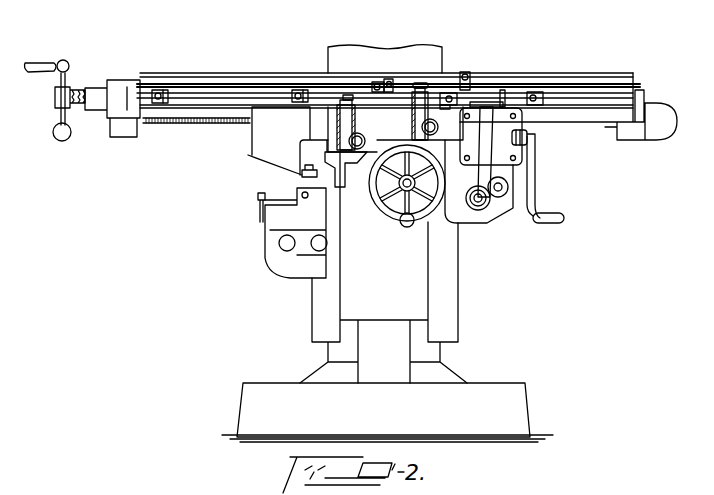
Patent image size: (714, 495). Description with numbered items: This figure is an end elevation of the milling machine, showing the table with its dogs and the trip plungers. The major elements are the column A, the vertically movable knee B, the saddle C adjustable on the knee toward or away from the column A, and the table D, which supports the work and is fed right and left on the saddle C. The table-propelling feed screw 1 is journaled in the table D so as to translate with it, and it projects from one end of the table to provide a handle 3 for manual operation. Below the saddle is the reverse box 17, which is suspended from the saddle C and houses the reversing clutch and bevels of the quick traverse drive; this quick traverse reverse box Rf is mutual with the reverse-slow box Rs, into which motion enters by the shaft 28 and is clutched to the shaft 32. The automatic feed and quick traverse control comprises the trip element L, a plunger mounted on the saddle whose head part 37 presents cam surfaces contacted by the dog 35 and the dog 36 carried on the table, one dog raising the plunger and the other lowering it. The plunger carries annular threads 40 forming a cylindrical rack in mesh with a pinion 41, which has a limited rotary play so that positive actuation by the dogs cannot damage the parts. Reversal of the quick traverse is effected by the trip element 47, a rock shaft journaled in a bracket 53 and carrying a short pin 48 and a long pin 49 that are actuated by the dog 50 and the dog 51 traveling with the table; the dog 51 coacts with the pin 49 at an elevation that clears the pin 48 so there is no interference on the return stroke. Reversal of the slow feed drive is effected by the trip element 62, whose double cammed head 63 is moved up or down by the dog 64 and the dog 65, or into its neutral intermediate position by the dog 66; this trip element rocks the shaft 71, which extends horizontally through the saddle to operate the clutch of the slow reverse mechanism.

The feed screw 1 is at (587, 124).
The handle 3 is at (67, 79).
The reverse box 17 is at (505, 203).
The shaft 28 is at (285, 248).
The shaft 32 is at (321, 249).
The dog 35 is at (388, 82).
The dog 36 is at (467, 76).
The part 37 is at (421, 83).
The annular threads 40 is at (417, 129).
The pinion 41 is at (434, 129).
The trip element 47 is at (488, 103).
The short pin 48 is at (476, 103).
The long pin 49 is at (503, 103).
The dog 50 is at (448, 106).
The dog 51 is at (543, 93).
The bracket 53 is at (486, 171).
The trip element 62 is at (345, 121).
The double cammed head 63 is at (348, 95).
The dog 64 is at (231, 119).
The dog 65 is at (305, 90).
The dog 66 is at (173, 90).
The shaft 71 is at (357, 148).
The column A is at (378, 60).
The knee B is at (387, 297).
The saddle C is at (270, 156).
The table D is at (250, 79).
The trip element L is at (443, 92).
The reverse box Rs is at (270, 230).
The reverse box Rf is at (488, 223).